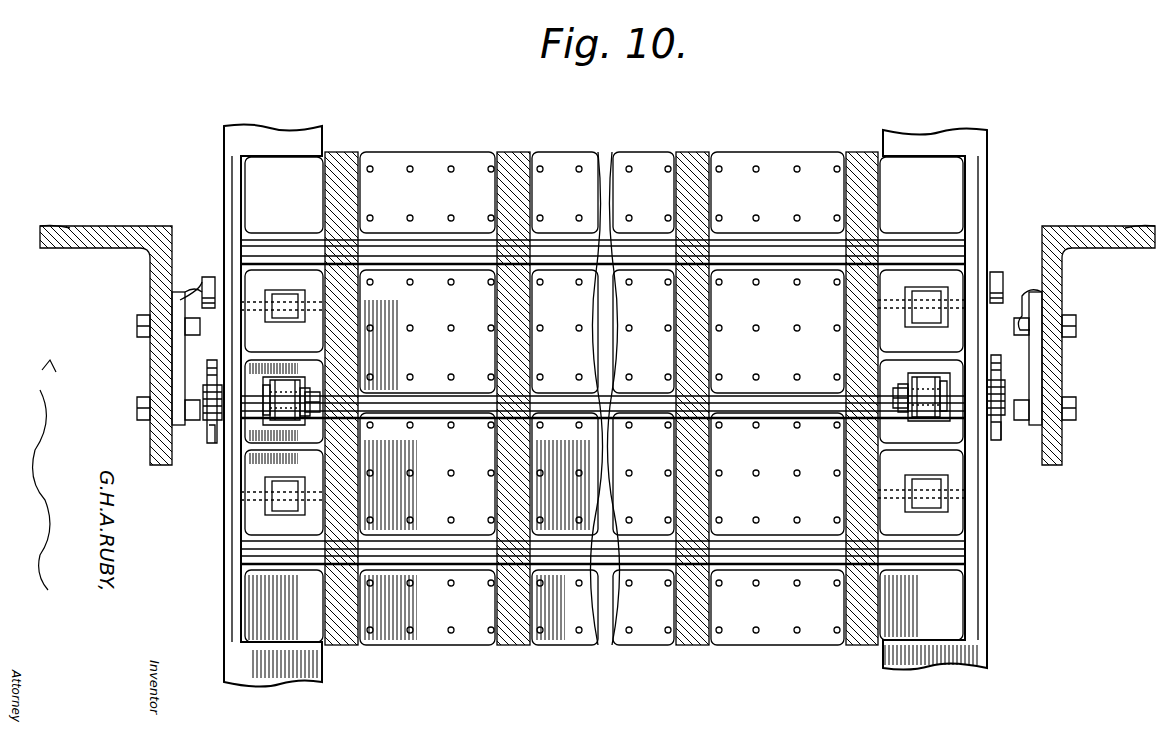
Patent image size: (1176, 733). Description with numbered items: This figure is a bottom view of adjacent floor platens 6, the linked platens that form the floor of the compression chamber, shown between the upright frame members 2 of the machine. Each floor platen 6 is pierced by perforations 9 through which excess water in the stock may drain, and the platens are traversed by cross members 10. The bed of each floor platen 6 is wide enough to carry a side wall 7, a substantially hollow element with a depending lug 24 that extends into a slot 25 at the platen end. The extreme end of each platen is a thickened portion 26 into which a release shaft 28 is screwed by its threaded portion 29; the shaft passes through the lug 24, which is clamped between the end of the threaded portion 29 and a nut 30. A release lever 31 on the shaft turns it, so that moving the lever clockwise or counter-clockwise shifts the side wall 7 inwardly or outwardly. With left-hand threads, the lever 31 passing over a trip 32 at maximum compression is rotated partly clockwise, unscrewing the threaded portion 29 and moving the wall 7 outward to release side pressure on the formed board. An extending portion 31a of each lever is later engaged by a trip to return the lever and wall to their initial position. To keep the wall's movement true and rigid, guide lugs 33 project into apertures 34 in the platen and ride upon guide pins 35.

The upright frame members 2 is at (97, 226).
The floor platens 6 is at (777, 658).
The side wall 7 is at (228, 142).
The perforations 9 is at (798, 590).
The cross bar 10 is at (342, 157).
The depending lug 24 is at (286, 384).
The slot 25 is at (298, 380).
The thickened portion 26 is at (240, 598).
The release shaft 28 is at (320, 406).
The threaded portion 29 is at (263, 410).
The nut 30 is at (318, 412).
The release lever 31 is at (210, 370).
The extending portion 31a is at (212, 445).
The trip 32 is at (208, 277).
The guide lugs 33 is at (290, 295).
The apertures 34 is at (278, 297).
The guide pins 35 is at (262, 305).